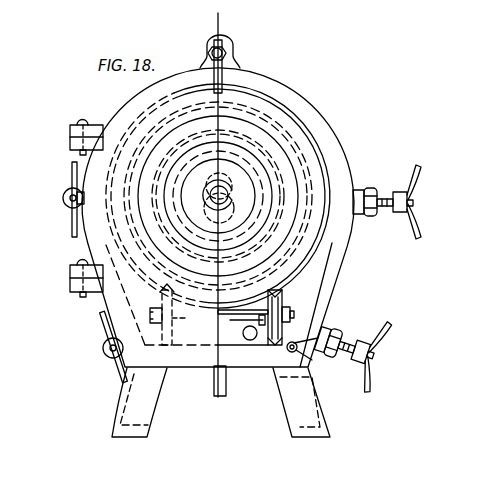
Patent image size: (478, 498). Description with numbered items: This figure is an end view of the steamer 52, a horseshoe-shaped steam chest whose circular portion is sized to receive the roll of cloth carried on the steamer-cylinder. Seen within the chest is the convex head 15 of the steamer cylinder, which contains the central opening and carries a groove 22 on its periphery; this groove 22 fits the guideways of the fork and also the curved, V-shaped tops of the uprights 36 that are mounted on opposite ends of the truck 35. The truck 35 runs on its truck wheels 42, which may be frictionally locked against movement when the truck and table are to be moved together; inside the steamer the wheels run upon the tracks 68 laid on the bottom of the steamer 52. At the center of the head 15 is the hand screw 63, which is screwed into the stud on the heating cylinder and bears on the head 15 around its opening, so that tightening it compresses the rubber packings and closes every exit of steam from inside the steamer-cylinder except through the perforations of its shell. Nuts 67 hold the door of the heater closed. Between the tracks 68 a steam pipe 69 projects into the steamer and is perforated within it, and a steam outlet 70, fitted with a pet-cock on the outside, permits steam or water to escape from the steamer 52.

The steamer 52 is at (263, 83).
The head 15 is at (233, 152).
The groove 22 is at (297, 150).
The hand screw 63 is at (242, 238).
The uprights 36 is at (280, 284).
The truck wheels 42 is at (283, 293).
The nuts 67 is at (398, 213).
The tracks 68 is at (160, 340).
The steam pipe 69 is at (249, 340).
The steam outlet 70 is at (303, 356).
The truck 35 is at (233, 316).